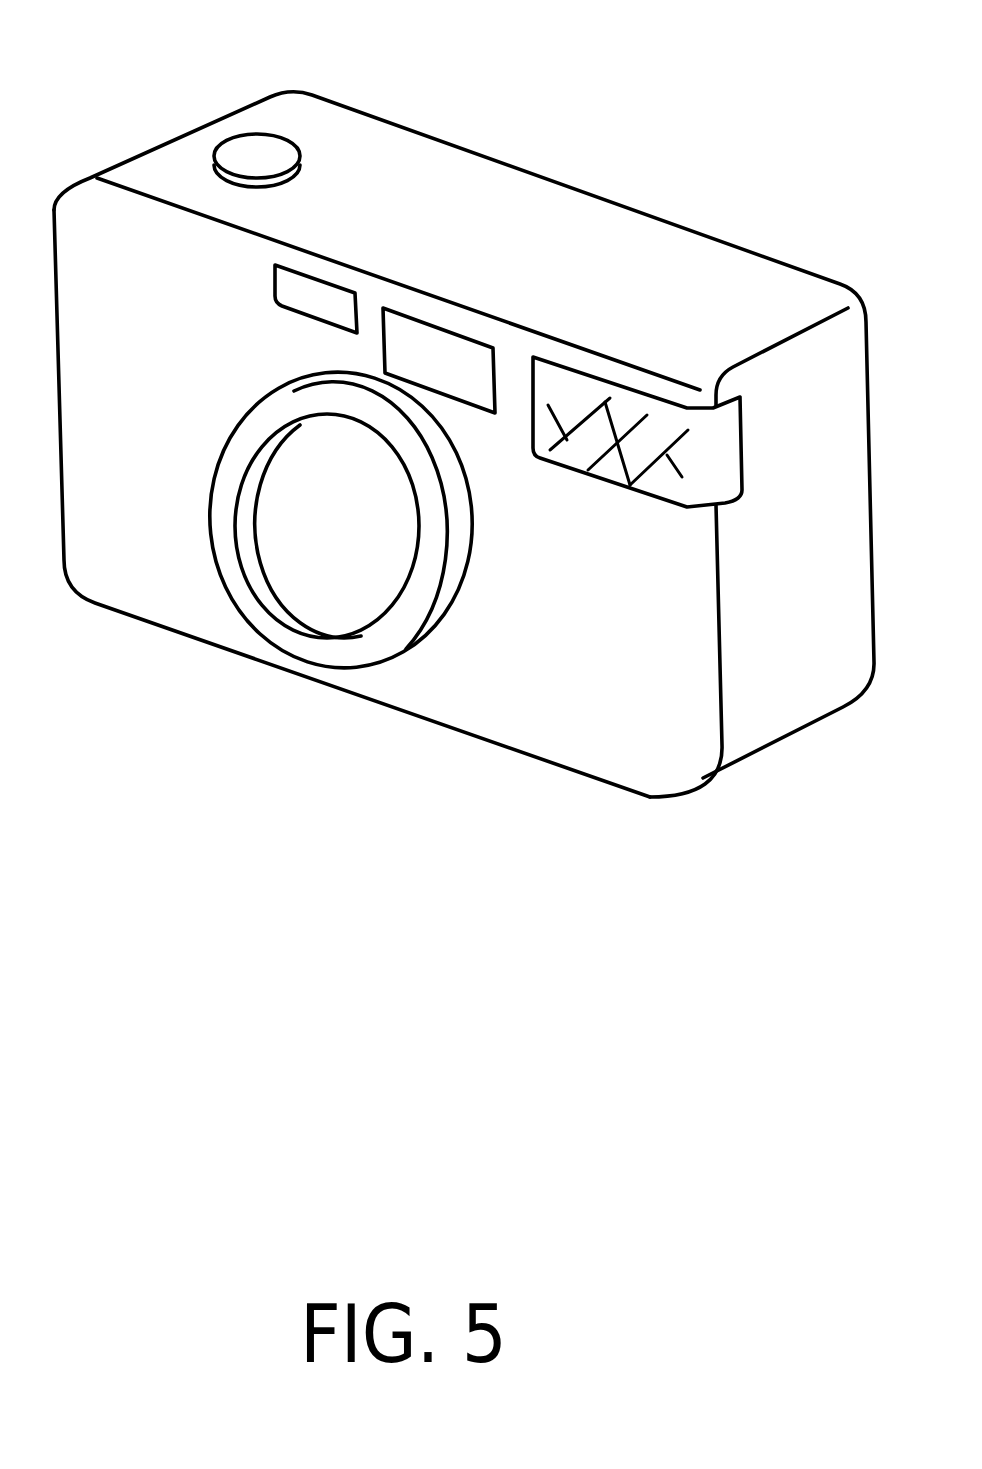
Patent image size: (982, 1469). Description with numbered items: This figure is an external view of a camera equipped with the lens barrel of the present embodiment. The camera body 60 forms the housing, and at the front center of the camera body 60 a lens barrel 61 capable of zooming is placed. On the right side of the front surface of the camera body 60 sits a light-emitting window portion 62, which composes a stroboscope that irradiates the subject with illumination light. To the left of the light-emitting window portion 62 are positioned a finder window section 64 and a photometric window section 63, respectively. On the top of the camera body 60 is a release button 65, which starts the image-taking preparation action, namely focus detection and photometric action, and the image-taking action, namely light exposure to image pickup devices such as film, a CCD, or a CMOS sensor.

The camera body 60 is at (700, 237).
The lens barrel 61 is at (337, 652).
The light-emitting window portion 62 is at (570, 392).
The photometric window section 63 is at (320, 298).
The finder window section 64 is at (436, 340).
The release button 65 is at (262, 148).